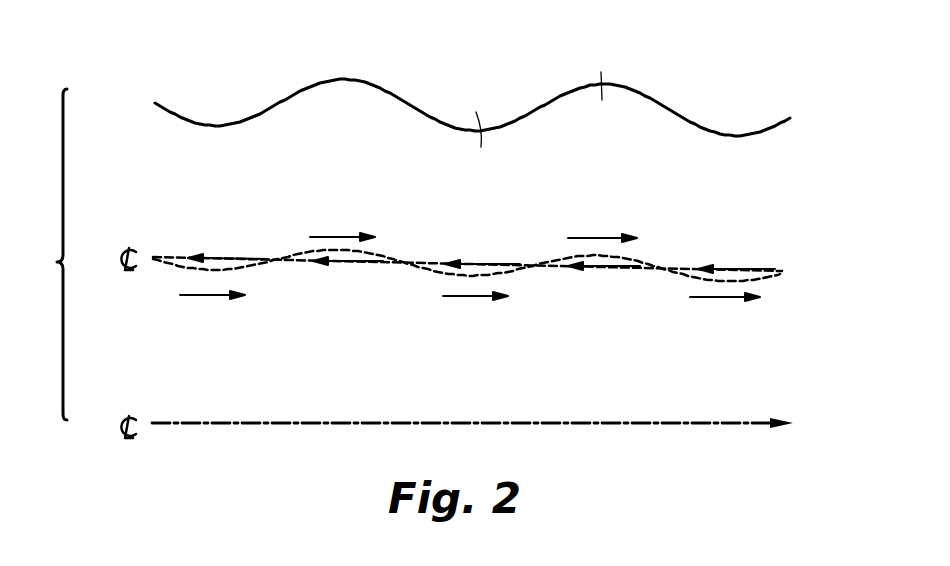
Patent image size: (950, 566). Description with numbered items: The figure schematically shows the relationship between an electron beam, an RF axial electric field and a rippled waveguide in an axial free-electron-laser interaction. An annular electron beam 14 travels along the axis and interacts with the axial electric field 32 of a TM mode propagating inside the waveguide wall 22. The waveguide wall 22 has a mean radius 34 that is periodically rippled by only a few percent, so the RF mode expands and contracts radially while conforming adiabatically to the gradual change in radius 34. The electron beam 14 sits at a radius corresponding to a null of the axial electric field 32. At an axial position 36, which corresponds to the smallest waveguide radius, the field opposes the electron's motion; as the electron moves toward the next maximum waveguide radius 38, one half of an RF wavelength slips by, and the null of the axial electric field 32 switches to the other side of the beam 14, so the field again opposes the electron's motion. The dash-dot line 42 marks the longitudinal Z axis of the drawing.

The annular electron beam 14 is at (760, 268).
The waveguide wall 22 is at (275, 102).
The axial electric field 32 is at (760, 283).
The waveguide radius 34 is at (42, 254).
The axial position 36 is at (479, 144).
The maximum waveguide radius 38 is at (599, 68).
The Z axis 42 is at (737, 422).